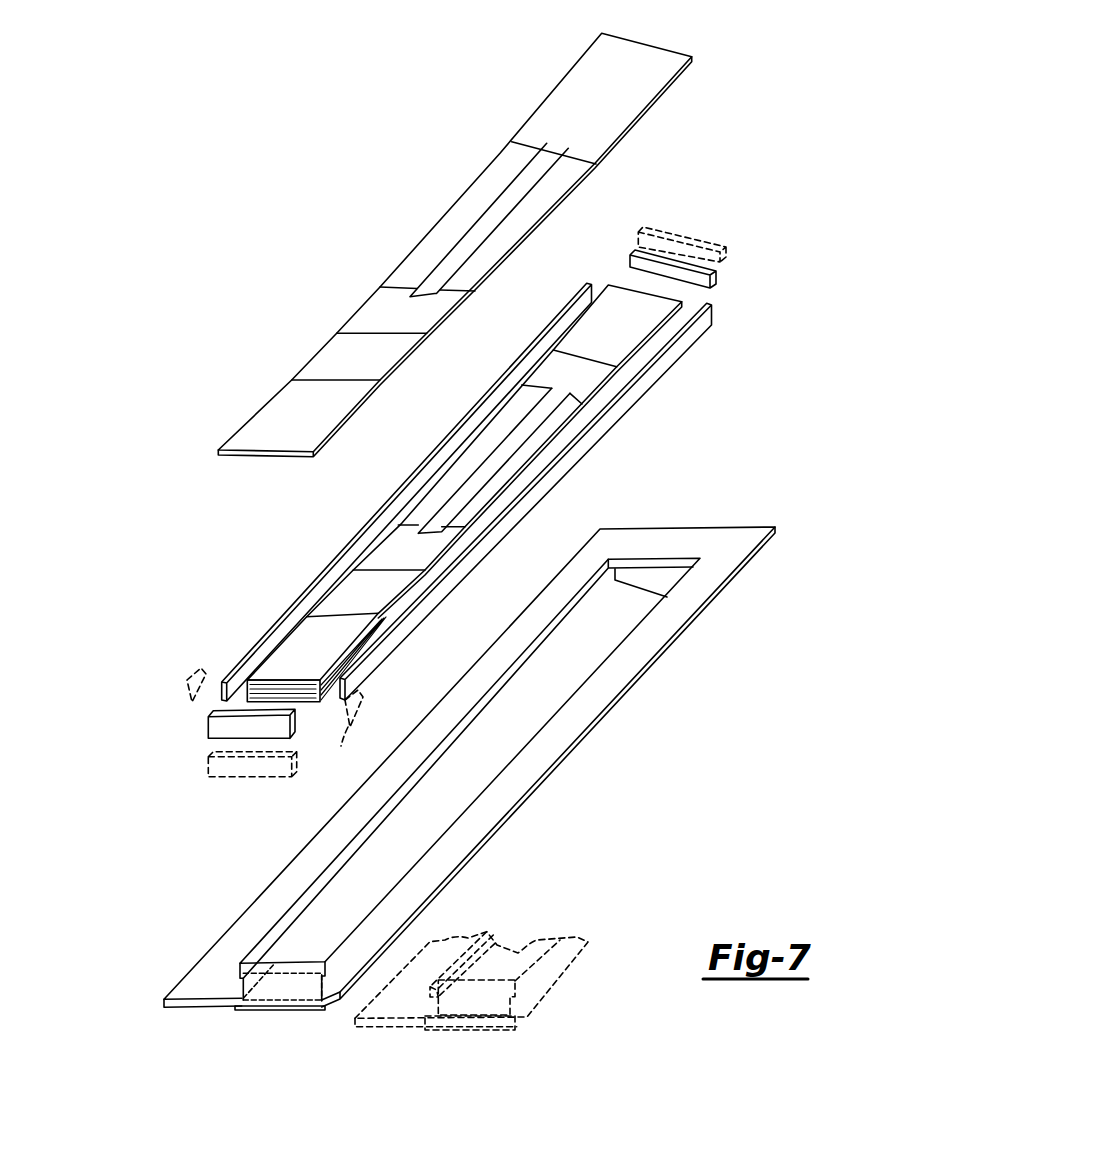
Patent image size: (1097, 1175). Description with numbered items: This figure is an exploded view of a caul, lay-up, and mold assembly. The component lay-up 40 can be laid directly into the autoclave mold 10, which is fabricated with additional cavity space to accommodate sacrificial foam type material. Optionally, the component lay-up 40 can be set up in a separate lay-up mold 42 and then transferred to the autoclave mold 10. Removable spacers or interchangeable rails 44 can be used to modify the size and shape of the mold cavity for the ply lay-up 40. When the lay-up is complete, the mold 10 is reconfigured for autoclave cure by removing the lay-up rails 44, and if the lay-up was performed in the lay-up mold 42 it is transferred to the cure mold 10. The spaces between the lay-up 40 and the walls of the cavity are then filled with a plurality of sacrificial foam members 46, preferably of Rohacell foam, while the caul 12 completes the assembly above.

The autoclave mold 10 is at (583, 740).
The cover plate 12 is at (464, 193).
The component lay-up 40 is at (613, 315).
The lay-up mold 42 is at (561, 977).
The lay-up rails 44 is at (680, 238).
The sacrificial foam members 46 is at (712, 311).